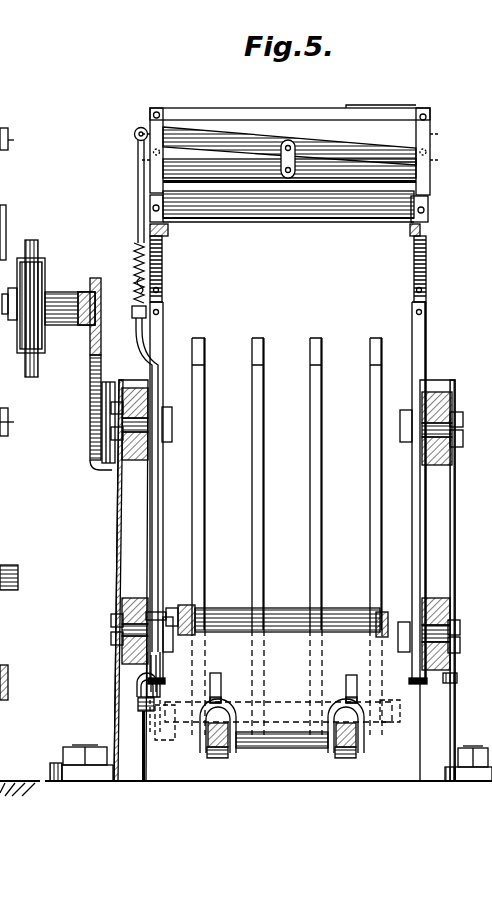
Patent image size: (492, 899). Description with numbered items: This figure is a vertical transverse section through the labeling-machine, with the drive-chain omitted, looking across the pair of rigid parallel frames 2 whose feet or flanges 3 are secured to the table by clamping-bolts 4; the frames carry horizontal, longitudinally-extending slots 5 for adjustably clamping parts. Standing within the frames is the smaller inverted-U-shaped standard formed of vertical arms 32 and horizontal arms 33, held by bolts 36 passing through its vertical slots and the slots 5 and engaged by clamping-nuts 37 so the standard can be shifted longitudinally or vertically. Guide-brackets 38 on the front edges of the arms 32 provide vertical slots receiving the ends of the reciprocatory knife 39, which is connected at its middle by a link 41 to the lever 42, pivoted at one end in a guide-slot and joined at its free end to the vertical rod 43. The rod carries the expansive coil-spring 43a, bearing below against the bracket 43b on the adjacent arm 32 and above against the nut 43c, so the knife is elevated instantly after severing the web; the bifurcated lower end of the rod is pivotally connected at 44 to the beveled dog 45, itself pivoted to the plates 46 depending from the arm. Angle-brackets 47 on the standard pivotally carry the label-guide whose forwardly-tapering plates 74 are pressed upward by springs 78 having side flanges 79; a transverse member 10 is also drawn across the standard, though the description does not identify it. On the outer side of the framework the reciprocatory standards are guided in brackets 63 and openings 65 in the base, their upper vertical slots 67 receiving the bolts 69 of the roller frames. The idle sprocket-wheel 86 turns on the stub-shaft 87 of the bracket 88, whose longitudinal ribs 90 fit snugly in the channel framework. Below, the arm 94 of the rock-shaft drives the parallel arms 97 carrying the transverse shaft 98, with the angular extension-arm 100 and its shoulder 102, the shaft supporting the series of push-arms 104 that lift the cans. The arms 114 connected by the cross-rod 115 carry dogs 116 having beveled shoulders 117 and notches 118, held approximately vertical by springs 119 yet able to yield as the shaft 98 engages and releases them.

The parallel frames 2 is at (284, 580).
The feet or flanges 3 is at (50, 766).
The clamping-bolts 4 is at (82, 750).
The horizontal slots 5 is at (132, 392).
The lower cross bar 10 is at (288, 206).
The vertical arms 32 is at (163, 336).
The horizontal arms 33 is at (240, 112).
The bolts 36 is at (166, 418).
The clamping-nuts 37 is at (111, 436).
The guide-brackets 38 is at (156, 152).
The reciprocatory knife 39 is at (289, 170).
The link 41 is at (296, 170).
The lever 42 is at (289, 146).
The vertical rod 43 is at (138, 212).
The expansive coil-spring 43a is at (138, 282).
The bracket 43b is at (134, 318).
The nut 43c is at (134, 258).
The pivotal connection 44 is at (137, 688).
The beveled dog 45 is at (138, 705).
The plates 46 is at (161, 662).
The angle-brackets 47 is at (162, 237).
The brackets 63 is at (16, 422).
The openings 65 is at (20, 779).
The vertical slots 67 is at (12, 230).
The bolts 69 is at (19, 139).
The forwardly-tapering parallel plates 74 is at (205, 222).
The springs 78 is at (163, 290).
The side flanges 79 is at (152, 230).
The idle sprocket-wheel 86 is at (45, 272).
The stub-shaft 87 is at (70, 308).
The bracket 88 is at (90, 375).
The longitudinal ribs 90 is at (106, 403).
The arm 94 is at (8, 685).
The parallel arms 97 is at (196, 614).
The transverse shaft 98 is at (277, 614).
The arm 100 is at (160, 612).
The shoulder 102 is at (180, 612).
The push-arms 104 is at (205, 533).
The arms 114 is at (219, 758).
The cross-rod 115 is at (282, 749).
The dogs 116 is at (210, 728).
The beveled shoulders 117 is at (220, 678).
The recesses or notches 118 is at (222, 697).
The springs 119 is at (206, 748).